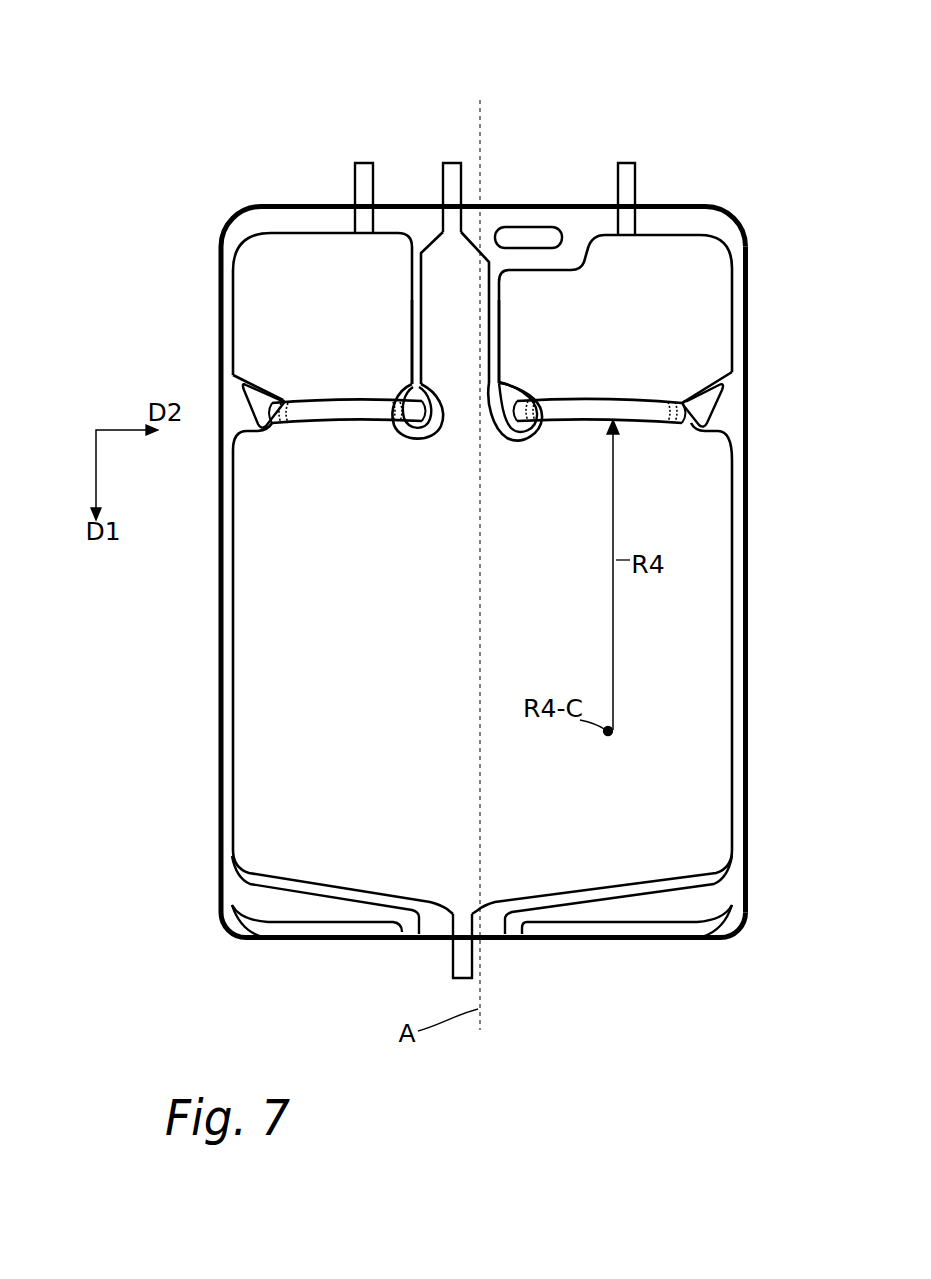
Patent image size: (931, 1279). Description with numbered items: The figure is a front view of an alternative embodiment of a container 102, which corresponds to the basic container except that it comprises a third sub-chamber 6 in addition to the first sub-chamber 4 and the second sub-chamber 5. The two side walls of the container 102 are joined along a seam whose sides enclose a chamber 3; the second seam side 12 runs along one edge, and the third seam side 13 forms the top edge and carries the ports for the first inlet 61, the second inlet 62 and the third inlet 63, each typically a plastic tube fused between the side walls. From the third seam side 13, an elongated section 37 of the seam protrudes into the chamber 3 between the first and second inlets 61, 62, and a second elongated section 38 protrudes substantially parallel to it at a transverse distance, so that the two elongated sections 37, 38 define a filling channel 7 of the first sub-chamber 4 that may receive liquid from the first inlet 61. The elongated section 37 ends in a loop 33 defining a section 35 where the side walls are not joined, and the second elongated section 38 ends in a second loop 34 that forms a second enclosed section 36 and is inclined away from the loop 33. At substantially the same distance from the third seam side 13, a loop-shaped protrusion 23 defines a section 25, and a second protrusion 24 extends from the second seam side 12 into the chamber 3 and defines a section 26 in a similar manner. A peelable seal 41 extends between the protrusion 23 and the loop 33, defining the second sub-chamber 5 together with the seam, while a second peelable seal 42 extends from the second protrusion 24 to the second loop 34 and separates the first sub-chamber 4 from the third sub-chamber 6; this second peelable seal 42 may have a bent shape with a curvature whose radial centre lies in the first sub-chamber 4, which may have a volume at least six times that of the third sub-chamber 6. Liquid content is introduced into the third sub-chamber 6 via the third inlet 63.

The container 102 is at (211, 148).
The second seam side 12 is at (740, 660).
The third seam side 13 is at (525, 215).
The filling channel 7 is at (450, 318).
The first inlet 61 is at (451, 160).
The second inlet 62 is at (365, 160).
The third inlet 63 is at (632, 162).
The second sub-chamber 5 is at (290, 311).
The third sub-chamber 6 is at (712, 305).
The elongated section 37 is at (412, 332).
The second elongated section 38 is at (505, 345).
The protrusion 23 is at (270, 398).
The second protrusion 24 is at (695, 388).
The section 25 is at (256, 437).
The section 26 is at (710, 383).
The peelable seal 41 is at (324, 400).
The second peelable seal 42 is at (566, 412).
The loop 33 is at (412, 437).
The second loop 34 is at (520, 442).
The section 35 is at (431, 434).
The second enclosed section 36 is at (509, 432).
The chamber 3 is at (683, 477).
The first sub-chamber 4 is at (693, 618).